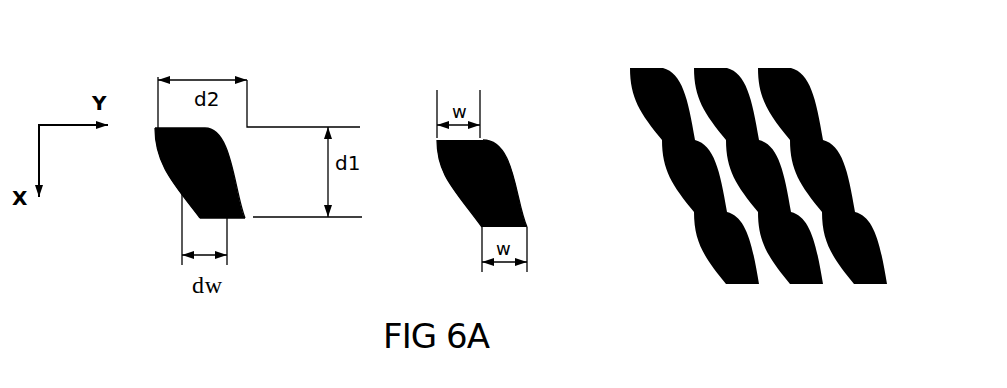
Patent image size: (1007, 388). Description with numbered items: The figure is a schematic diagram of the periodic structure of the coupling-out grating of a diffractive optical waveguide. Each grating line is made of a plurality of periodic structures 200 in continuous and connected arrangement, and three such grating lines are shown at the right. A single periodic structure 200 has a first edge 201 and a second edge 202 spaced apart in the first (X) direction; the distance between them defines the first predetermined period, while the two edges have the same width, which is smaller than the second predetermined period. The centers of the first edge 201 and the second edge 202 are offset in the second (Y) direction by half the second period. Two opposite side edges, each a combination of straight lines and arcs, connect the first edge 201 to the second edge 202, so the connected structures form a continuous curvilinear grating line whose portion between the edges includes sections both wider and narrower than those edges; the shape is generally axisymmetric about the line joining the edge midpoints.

The periodic structure 200 is at (190, 139).
The first edge 201 is at (178, 129).
The second edge 202 is at (241, 221).